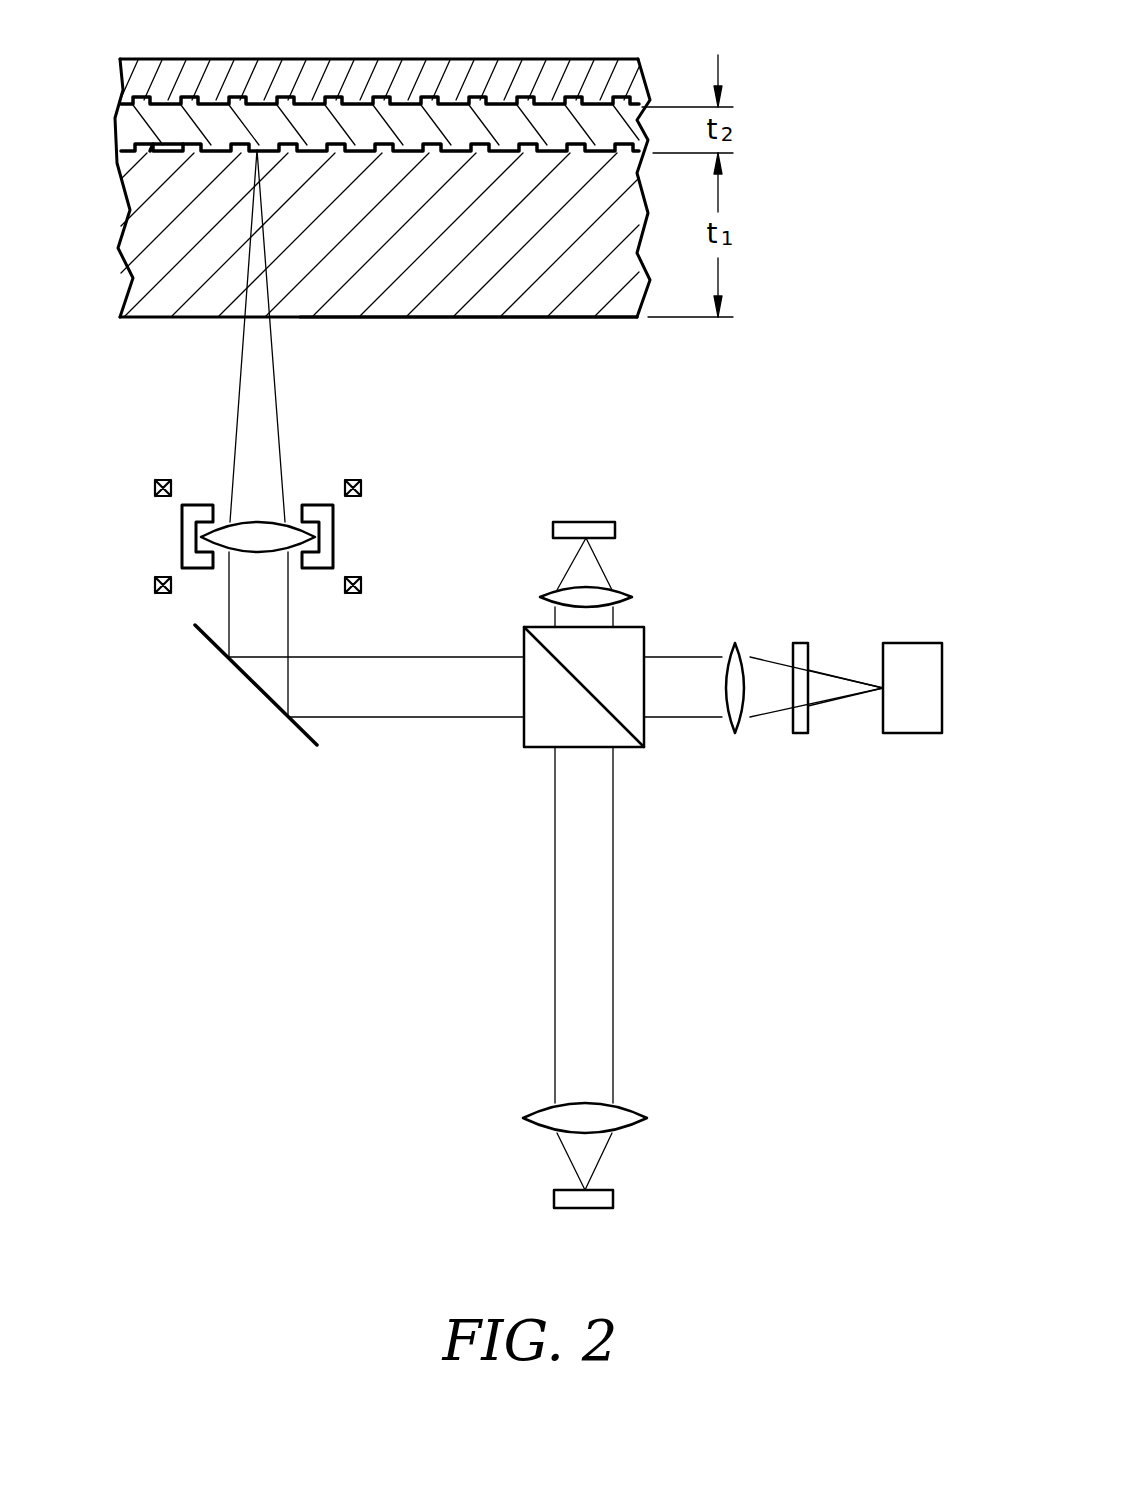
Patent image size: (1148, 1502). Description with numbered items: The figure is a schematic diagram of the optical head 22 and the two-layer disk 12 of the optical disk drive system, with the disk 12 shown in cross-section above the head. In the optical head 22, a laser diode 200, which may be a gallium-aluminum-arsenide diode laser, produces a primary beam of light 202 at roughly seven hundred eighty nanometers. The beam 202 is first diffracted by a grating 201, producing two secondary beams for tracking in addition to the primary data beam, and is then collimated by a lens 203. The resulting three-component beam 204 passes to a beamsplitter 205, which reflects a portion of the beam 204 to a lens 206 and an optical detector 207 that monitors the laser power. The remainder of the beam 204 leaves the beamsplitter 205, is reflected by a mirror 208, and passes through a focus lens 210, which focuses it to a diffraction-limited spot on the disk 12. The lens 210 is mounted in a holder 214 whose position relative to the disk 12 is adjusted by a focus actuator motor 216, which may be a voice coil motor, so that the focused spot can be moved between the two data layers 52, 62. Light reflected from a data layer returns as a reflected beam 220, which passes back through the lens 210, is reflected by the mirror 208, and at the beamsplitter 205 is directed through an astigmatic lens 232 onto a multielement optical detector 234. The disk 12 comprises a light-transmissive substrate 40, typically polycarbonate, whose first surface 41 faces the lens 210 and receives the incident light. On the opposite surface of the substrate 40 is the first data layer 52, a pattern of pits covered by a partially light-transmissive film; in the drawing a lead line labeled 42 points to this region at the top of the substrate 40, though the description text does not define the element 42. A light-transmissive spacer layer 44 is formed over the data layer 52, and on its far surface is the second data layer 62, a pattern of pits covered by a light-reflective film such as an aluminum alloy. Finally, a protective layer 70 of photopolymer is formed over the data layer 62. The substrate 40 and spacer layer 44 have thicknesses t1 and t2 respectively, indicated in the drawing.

The disk 12 is at (773, 229).
The optical head 22 is at (807, 948).
The light-transmissive substrate 40 is at (176, 290).
The first surface 41 is at (576, 318).
The first data layer 42 is at (645, 170).
The spacer layer 44 is at (134, 126).
The first data layer 52 is at (167, 153).
The second data layer 62 is at (606, 98).
The protective layer 70 is at (411, 68).
The laser diode 200 is at (914, 643).
The grating 201 is at (797, 734).
The primary beam of light 202 is at (833, 692).
The lens 203 is at (736, 643).
The three-component beam 204 is at (268, 380).
The beamsplitter 205 is at (524, 641).
The lens 206 is at (542, 598).
The optical detector 207 is at (574, 522).
The mirror 208 is at (262, 693).
The focus lens 210 is at (293, 553).
The holder 214 is at (323, 505).
The focus actuator motor 216 is at (372, 490).
The reflected beam 220 is at (555, 787).
The astigmatic lens 232 is at (648, 1118).
The multielement optical detector 234 is at (615, 1200).